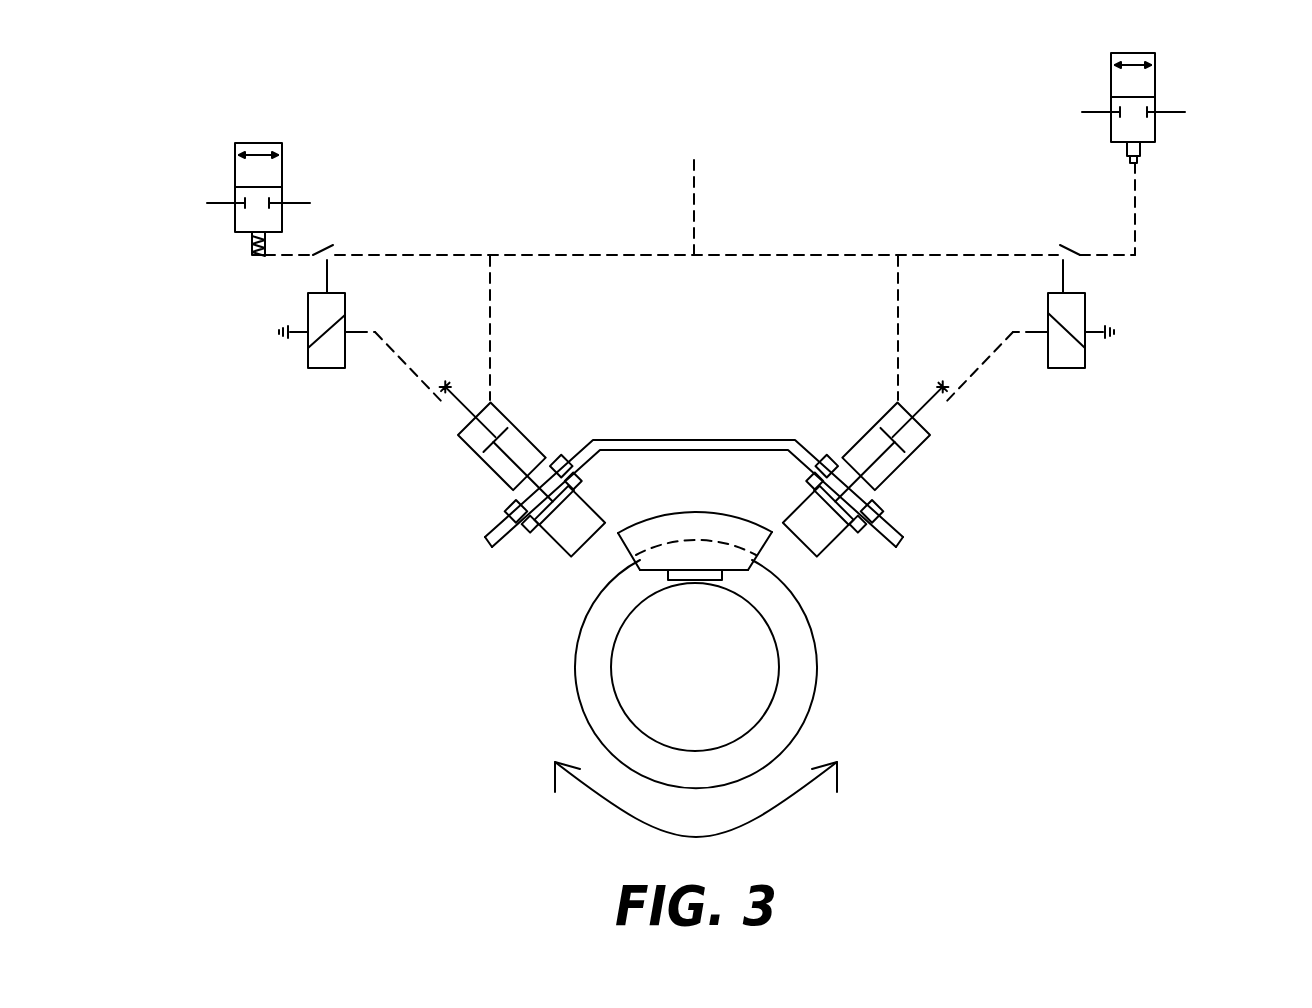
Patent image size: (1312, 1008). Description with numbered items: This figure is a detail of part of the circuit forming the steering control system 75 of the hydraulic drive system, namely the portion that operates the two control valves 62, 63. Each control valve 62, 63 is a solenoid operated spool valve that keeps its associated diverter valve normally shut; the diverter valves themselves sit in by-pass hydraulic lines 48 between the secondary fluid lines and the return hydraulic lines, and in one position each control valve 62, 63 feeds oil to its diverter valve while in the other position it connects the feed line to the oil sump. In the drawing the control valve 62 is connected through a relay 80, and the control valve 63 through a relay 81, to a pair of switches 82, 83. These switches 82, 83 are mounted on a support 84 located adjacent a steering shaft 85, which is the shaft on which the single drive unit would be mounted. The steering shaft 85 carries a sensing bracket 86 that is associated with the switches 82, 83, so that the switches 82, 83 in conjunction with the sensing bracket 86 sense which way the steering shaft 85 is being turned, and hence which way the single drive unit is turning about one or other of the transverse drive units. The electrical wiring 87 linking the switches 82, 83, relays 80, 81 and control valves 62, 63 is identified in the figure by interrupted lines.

The by-pass hydraulic line 48 is at (218, 203).
The control valve 62 is at (1155, 85).
The control valve 63 is at (282, 173).
The steering control system 75 is at (1195, 240).
The relay 80 is at (1085, 357).
The relay 81 is at (320, 360).
The switch 82 is at (878, 482).
The switch 83 is at (513, 482).
The support 84 is at (695, 440).
The steering shaft 85 is at (627, 665).
The sensing bracket 86 is at (760, 553).
The electrical wiring 87 is at (795, 256).